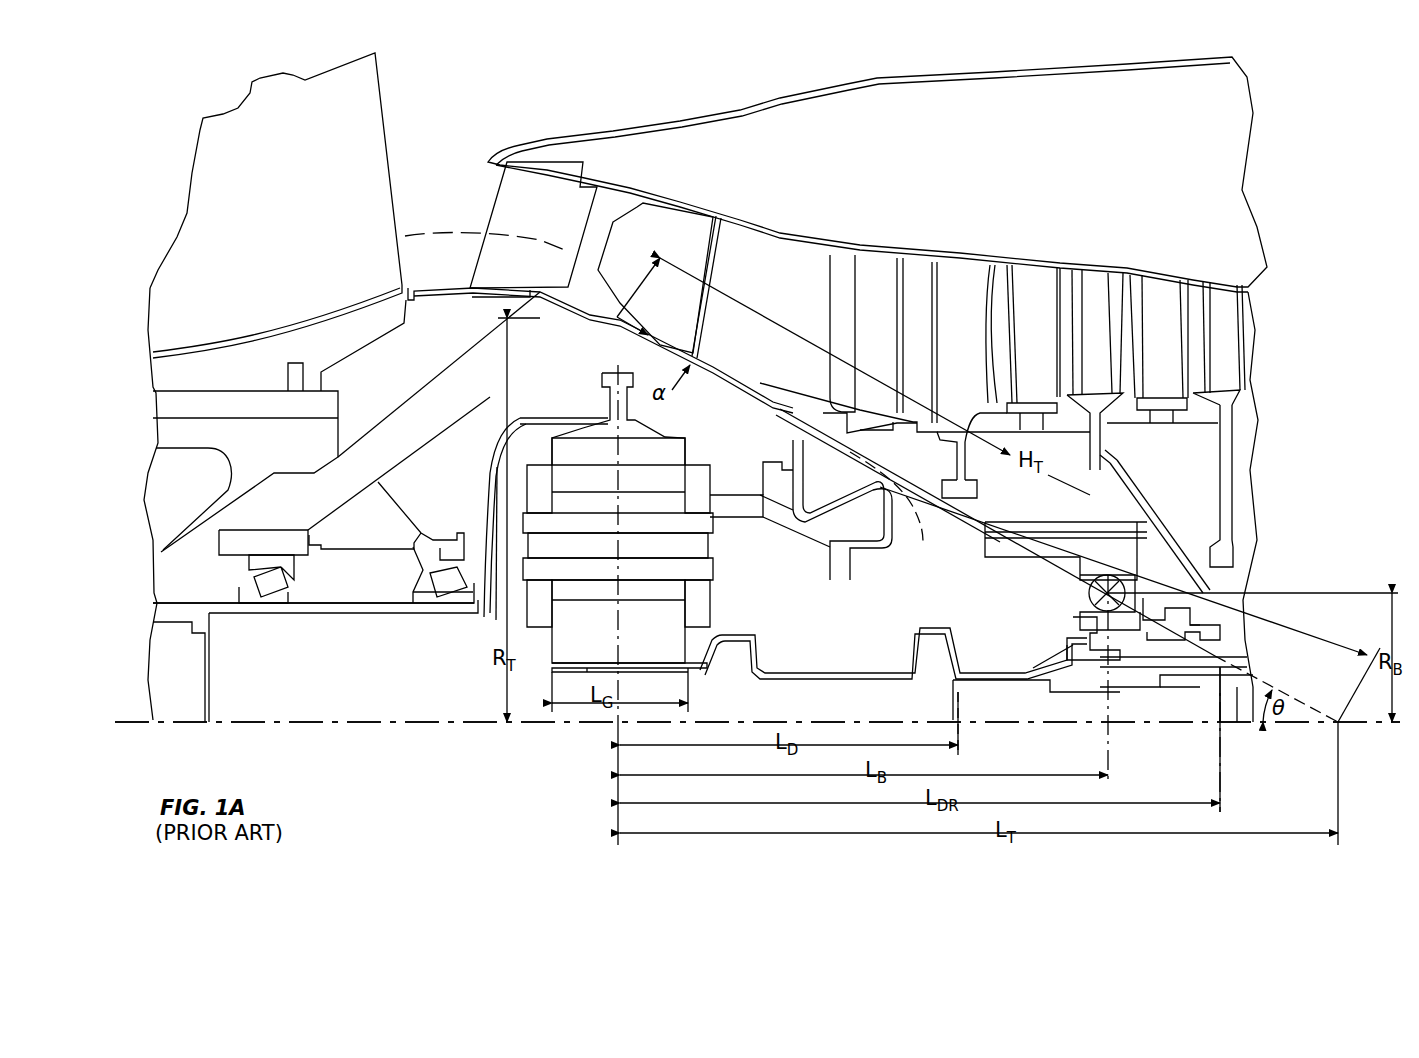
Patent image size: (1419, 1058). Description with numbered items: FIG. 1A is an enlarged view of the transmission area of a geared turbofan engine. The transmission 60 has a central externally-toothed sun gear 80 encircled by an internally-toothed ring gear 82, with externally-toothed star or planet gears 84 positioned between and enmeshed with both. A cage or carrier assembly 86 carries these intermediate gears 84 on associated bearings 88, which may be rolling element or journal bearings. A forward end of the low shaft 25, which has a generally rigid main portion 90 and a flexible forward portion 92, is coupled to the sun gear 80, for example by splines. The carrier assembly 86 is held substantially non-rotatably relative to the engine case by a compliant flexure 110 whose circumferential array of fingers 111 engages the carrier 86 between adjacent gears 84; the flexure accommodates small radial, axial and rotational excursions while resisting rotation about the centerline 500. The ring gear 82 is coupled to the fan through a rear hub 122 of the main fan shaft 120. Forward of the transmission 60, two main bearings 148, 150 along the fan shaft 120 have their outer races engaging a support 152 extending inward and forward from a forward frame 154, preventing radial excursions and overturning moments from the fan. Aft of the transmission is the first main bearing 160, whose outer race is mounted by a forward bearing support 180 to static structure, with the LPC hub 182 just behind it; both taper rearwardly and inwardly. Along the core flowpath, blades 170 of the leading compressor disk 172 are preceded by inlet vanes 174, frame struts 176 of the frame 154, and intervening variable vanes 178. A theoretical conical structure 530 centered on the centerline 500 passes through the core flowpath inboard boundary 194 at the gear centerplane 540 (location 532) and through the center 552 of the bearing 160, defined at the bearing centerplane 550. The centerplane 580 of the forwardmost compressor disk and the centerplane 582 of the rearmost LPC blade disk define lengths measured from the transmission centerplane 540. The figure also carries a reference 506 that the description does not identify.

The low shaft 25 is at (1245, 722).
The transmission 60 is at (560, 733).
The sun gear 80 is at (690, 643).
The ring gear 82 is at (652, 438).
The star or planet gears 84 is at (662, 473).
The carrier assembly 86 is at (720, 596).
The bearings 88 is at (693, 568).
The rigid main portion 90 is at (1210, 697).
The flexible forward portion 92 is at (830, 665).
The compliant flexure 110 is at (864, 558).
The fingers 111 is at (733, 506).
The main fan shaft 120 is at (333, 622).
The rear hub 122 is at (490, 560).
The main bearing 148 is at (268, 598).
The main bearing 150 is at (445, 595).
The support 152 is at (402, 453).
The forward frame 154 is at (700, 232).
The first main bearing 160 is at (1150, 583).
The blades 170 is at (973, 272).
The disk 172 is at (975, 466).
The inlet vanes 174 is at (538, 212).
The frame struts 176 is at (838, 262).
The intervening vanes 178 is at (890, 268).
The forward bearing support 180 is at (1050, 518).
The LPC hub 182 is at (1165, 510).
The core flowpath inboard boundary 194 is at (757, 367).
The centerline 500 is at (382, 728).
The fan blade span reference line 506 is at (428, 232).
The theoretical conical structure 530 is at (897, 510).
The location 532 is at (660, 330).
The gear centerplane 540 is at (612, 763).
The bearing centerplane 550 is at (1068, 640).
The bearing center 552 is at (1090, 590).
The disk centerplane 580 is at (965, 736).
The disk centerplane 582 is at (1225, 791).